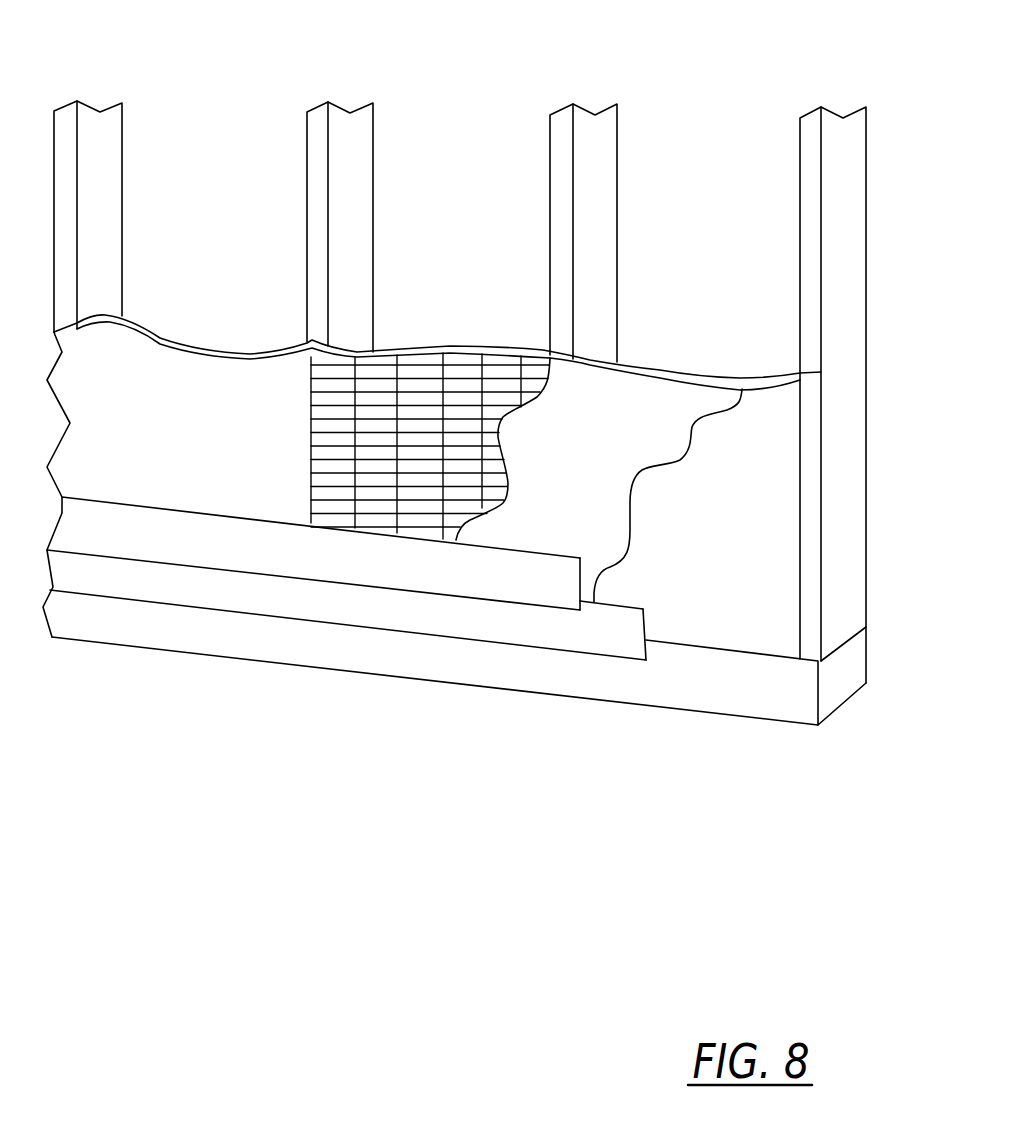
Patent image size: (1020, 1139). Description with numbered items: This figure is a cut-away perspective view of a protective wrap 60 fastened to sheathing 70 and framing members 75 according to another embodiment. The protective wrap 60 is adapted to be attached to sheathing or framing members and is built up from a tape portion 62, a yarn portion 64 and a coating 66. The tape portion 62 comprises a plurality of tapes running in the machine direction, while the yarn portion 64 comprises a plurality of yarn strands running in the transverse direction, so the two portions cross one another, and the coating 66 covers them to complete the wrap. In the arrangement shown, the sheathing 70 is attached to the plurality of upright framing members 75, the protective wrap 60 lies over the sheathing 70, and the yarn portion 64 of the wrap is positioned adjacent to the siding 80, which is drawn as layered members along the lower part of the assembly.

The protective wrap 60 is at (511, 332).
The tape portion 62 is at (422, 378).
The yarn portion 64 is at (481, 378).
The coating 66 is at (560, 480).
The sheathing 70 is at (703, 548).
The framing members 75 is at (110, 105).
The siding 80 is at (185, 555).